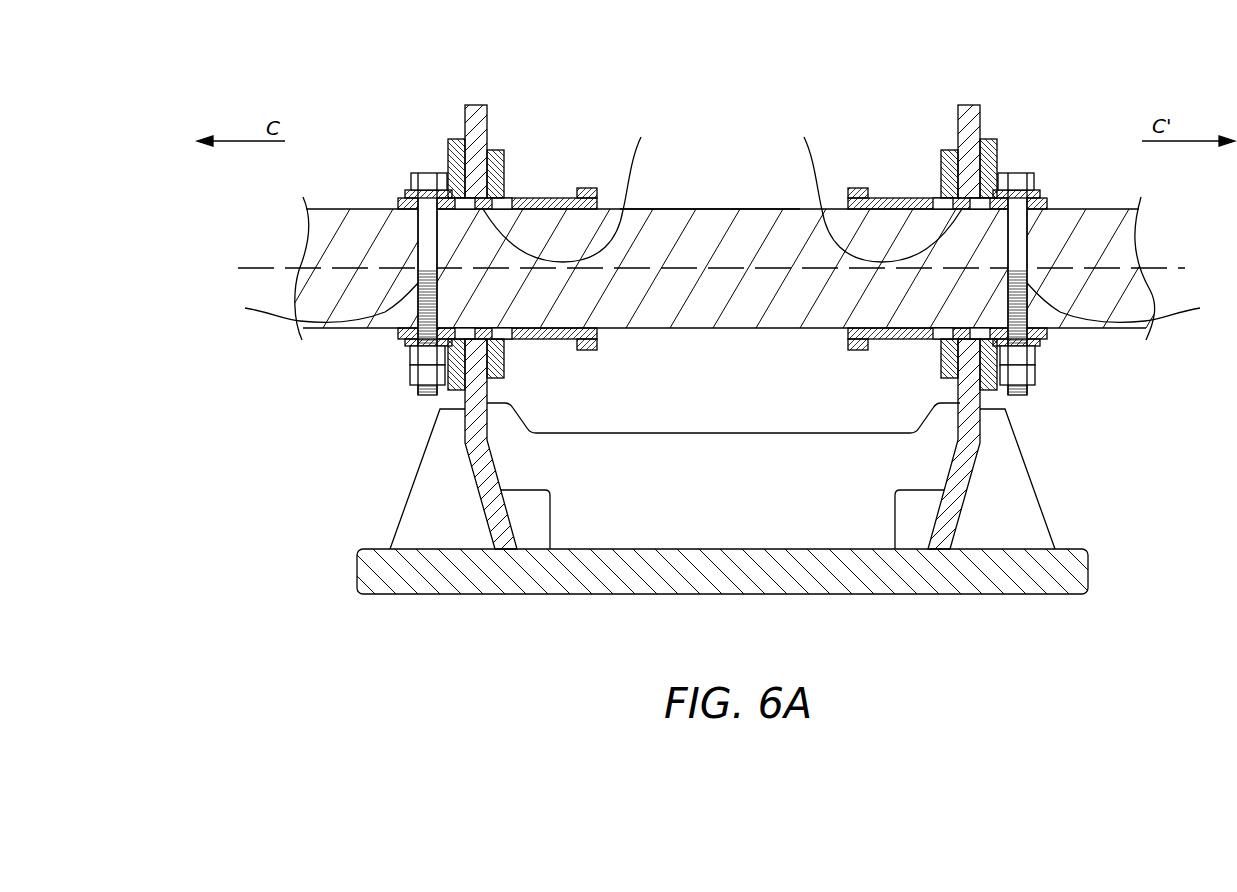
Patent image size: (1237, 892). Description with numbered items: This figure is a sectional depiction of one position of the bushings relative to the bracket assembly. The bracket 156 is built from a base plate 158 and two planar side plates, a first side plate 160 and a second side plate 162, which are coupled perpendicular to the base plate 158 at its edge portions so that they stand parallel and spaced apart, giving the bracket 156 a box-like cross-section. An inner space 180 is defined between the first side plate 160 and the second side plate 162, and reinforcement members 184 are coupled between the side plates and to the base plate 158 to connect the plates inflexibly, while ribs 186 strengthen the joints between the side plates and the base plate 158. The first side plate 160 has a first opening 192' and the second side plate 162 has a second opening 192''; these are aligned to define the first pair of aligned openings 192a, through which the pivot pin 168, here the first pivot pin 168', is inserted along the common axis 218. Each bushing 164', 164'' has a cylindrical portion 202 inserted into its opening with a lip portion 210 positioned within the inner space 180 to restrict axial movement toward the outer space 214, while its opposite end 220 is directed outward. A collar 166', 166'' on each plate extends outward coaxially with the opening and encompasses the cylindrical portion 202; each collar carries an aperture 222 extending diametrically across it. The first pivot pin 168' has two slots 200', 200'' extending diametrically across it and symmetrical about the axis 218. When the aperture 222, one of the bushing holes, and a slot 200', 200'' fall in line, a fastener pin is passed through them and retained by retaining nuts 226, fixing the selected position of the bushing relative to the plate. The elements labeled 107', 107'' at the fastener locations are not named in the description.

The first fastener assembly 107' is at (435, 128).
The second fastener assembly 107'' is at (1030, 128).
The bracket 156 is at (450, 595).
The base plate 158 is at (580, 595).
The first side plate 160 is at (487, 105).
The second side plate 162 is at (980, 105).
The bushing 164' is at (515, 260).
The bushing 164'' is at (942, 260).
The collar 166' is at (350, 353).
The collar 166'' is at (1102, 353).
The pivot pin 168 is at (750, 182).
The first pivot pin 168' is at (669, 175).
The inner space 180 is at (731, 393).
The reinforcement member 184 is at (737, 433).
The rib 186 is at (402, 520).
The first opening 192' is at (310, 303).
The second opening 192'' is at (1129, 303).
The first pair of aligned openings 192a is at (722, 189).
The slot 200' is at (372, 266).
The slot 200'' is at (1061, 273).
The cylindrical portion 202 is at (525, 340).
The lip portion 210 is at (587, 351).
The outer space 214 is at (197, 194).
The axis 218 is at (262, 268).
The opposite end 220 is at (398, 200).
The aperture 222 is at (428, 173).
The retaining nuts 226 is at (409, 378).